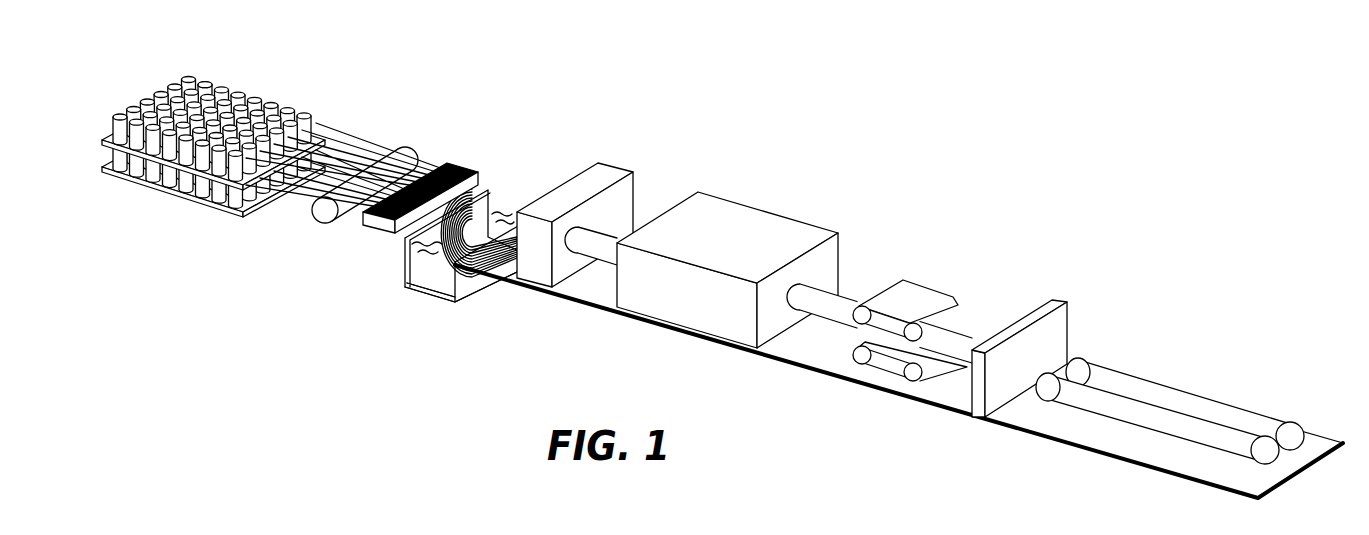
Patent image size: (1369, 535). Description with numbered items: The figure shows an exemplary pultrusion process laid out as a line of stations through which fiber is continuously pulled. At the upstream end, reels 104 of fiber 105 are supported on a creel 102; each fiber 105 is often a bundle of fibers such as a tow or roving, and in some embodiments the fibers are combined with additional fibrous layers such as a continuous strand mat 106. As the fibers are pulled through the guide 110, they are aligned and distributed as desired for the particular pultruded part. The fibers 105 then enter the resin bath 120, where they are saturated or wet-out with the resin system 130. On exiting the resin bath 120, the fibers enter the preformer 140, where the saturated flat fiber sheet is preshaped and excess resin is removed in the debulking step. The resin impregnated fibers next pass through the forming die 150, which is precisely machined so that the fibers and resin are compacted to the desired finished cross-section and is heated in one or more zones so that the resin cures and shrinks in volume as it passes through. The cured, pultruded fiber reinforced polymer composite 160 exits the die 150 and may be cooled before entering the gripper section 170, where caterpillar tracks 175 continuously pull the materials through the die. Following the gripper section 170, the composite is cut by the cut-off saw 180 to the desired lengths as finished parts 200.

The creel 102 is at (111, 99).
The reel 104 is at (207, 81).
The fiber 105 is at (333, 128).
The continuous strand mat 106 is at (323, 214).
The guide 110 is at (388, 224).
The resin bath 120 is at (475, 235).
The resin system 130 is at (433, 282).
The preformer 140 is at (605, 177).
The forming die 150 is at (752, 222).
The fiber reinforced polymer composite 160 is at (843, 303).
The gripper section 170 is at (926, 290).
The caterpillar tracks 175 is at (925, 296).
The cut-off saw 180 is at (1058, 330).
The finished parts 200 is at (1193, 375).